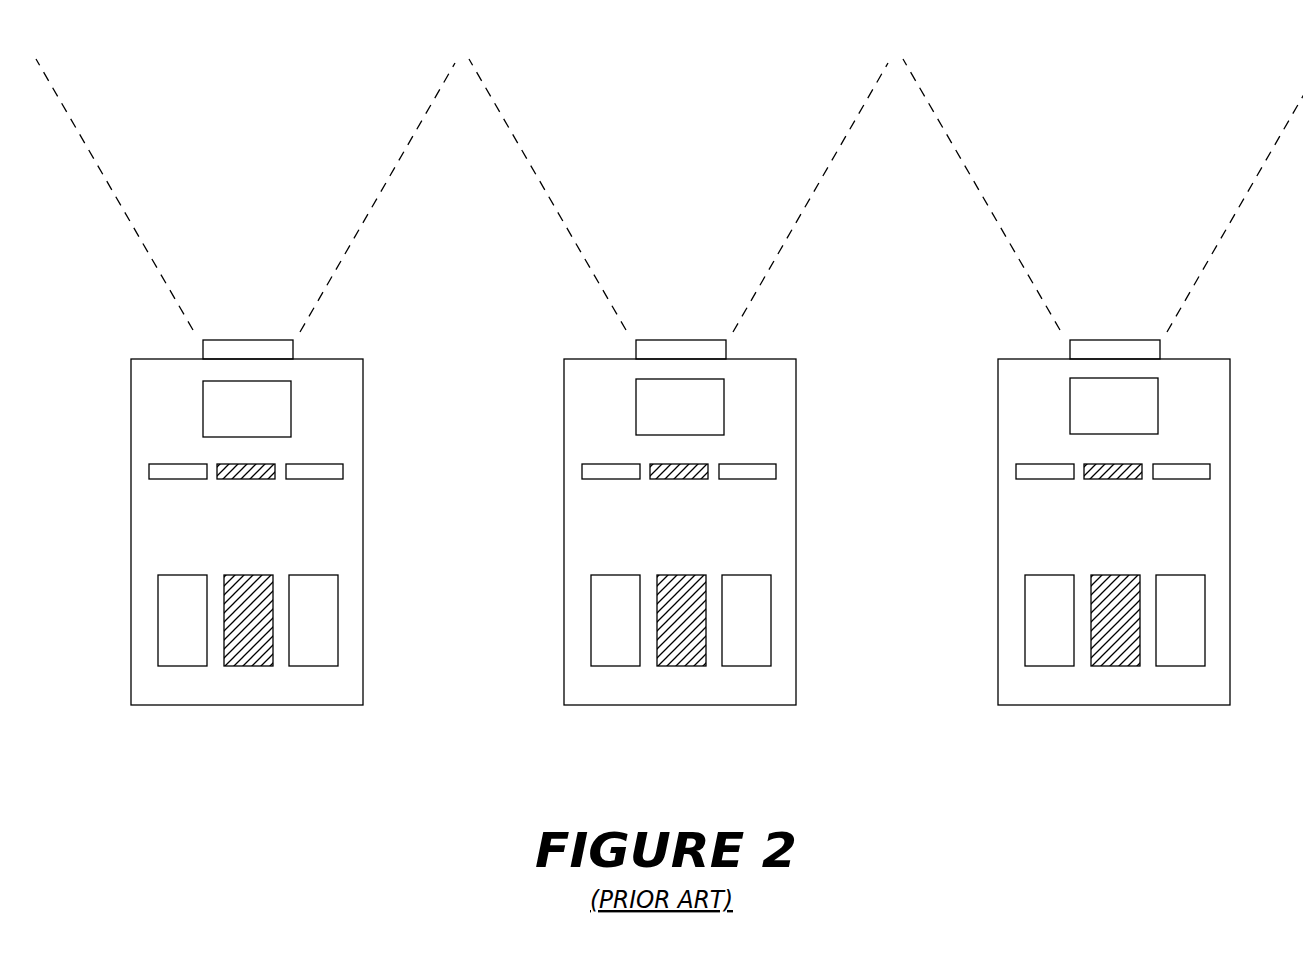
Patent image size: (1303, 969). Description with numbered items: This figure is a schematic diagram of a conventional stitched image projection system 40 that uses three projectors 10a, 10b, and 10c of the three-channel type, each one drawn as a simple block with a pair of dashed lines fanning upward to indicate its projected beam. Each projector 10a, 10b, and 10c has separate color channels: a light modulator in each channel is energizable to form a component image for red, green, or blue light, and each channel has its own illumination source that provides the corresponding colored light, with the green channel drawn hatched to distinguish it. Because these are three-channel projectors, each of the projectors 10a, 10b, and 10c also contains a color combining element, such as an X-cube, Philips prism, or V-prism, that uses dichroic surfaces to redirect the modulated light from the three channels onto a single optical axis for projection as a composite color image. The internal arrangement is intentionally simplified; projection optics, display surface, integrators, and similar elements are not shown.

The stitched image projection system 40 is at (666, 407).
The projector 10a is at (131, 410).
The projector 10b is at (625, 548).
The projector 10c is at (1063, 548).